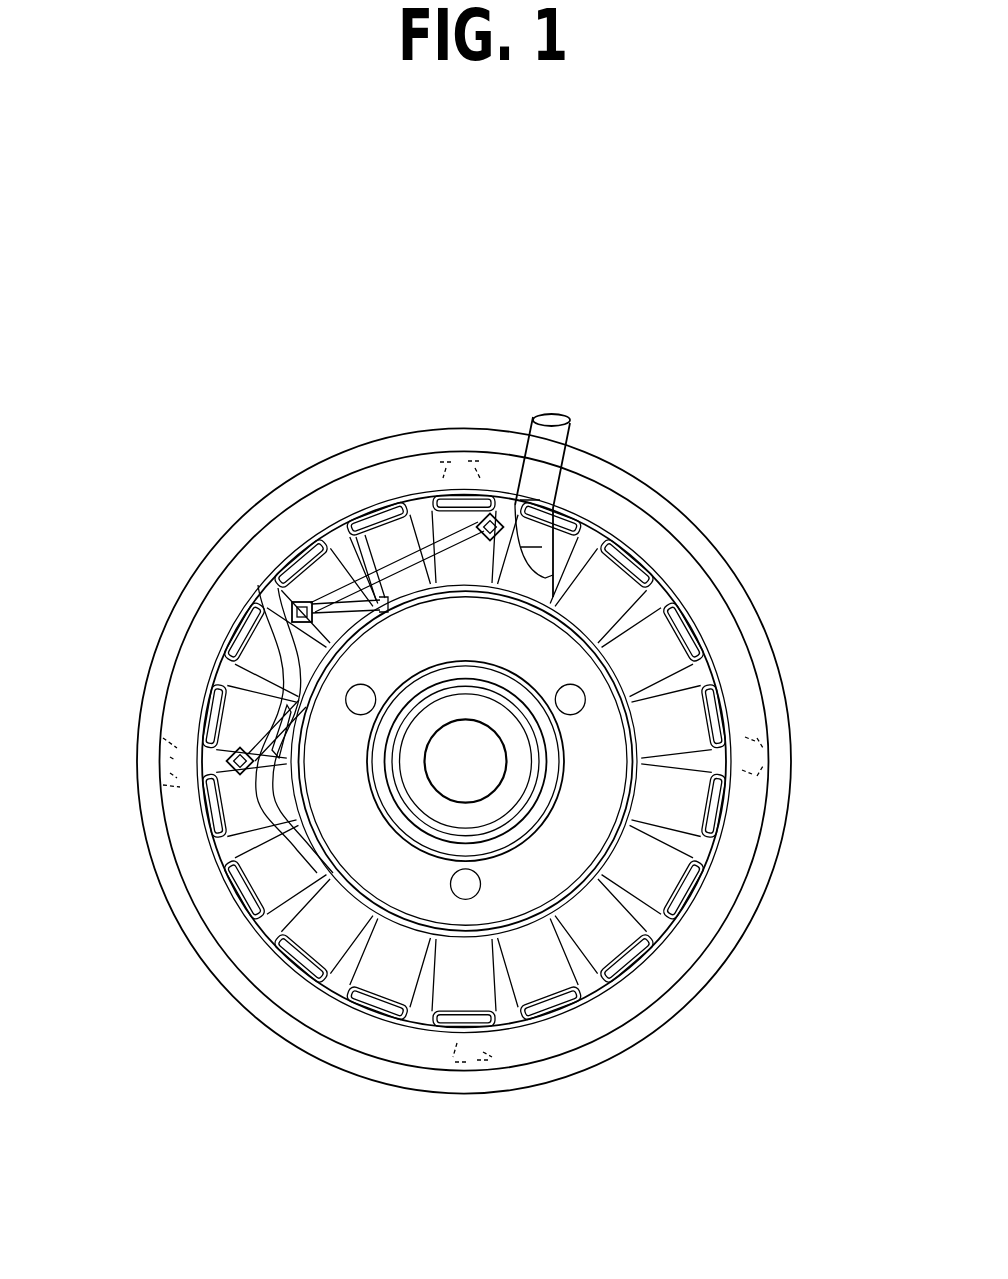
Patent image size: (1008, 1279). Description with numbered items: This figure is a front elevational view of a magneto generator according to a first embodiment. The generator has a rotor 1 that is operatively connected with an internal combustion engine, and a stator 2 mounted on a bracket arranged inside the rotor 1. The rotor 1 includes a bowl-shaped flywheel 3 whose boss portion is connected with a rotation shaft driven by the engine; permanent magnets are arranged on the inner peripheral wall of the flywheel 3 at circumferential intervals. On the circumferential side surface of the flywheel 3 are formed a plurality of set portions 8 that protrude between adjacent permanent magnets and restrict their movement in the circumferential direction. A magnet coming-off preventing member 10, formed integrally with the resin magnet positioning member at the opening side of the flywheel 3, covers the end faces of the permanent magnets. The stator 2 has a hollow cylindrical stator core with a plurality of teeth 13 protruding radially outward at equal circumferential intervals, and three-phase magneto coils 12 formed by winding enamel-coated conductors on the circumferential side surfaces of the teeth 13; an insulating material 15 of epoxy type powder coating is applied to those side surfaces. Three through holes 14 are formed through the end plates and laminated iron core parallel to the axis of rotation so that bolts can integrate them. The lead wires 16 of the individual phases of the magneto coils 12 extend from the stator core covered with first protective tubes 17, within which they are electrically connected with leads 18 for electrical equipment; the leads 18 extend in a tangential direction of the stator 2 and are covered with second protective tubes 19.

The rotor 1 is at (772, 612).
The stator 2 is at (547, 880).
The flywheel 3 is at (663, 1030).
The set portions 8 is at (790, 757).
The magnet coming-off preventing member 10 is at (695, 580).
The magneto coils 12 is at (603, 583).
The teeth 13 is at (378, 503).
The through holes 14 is at (575, 697).
The insulating material 15 is at (680, 720).
The lead wires 16 is at (298, 820).
The first protective tubes 17 is at (290, 608).
The leads 18 is at (350, 530).
The second protective tubes 19 is at (578, 512).